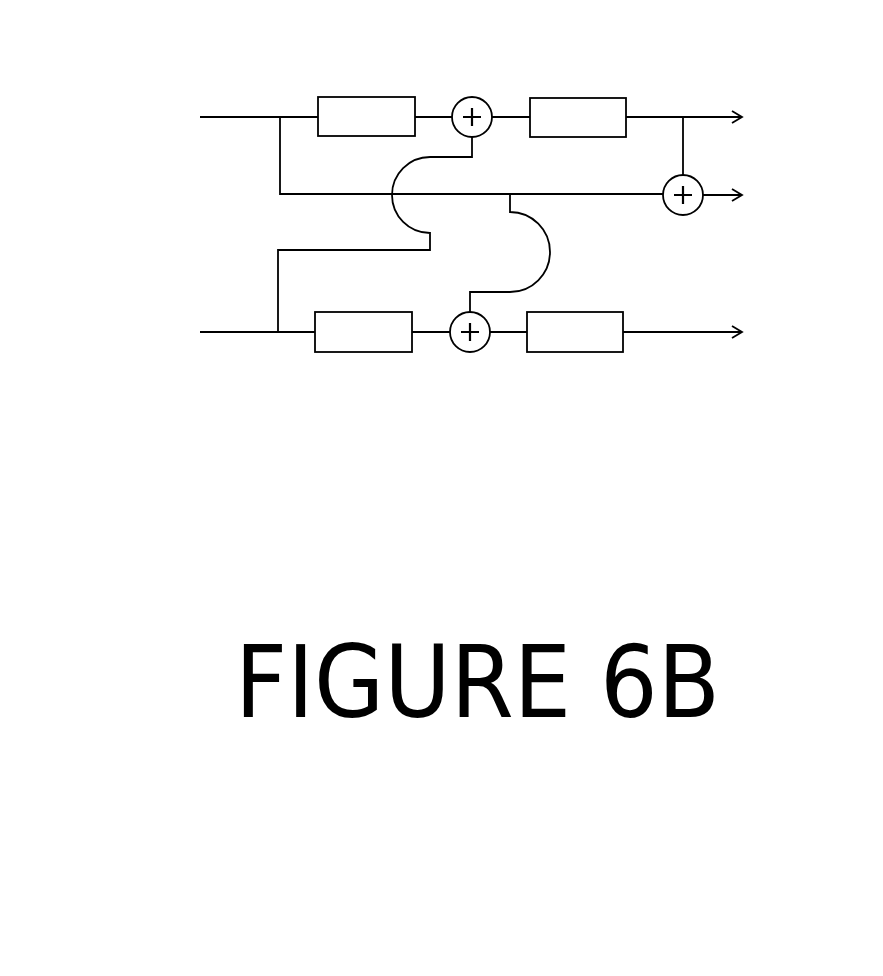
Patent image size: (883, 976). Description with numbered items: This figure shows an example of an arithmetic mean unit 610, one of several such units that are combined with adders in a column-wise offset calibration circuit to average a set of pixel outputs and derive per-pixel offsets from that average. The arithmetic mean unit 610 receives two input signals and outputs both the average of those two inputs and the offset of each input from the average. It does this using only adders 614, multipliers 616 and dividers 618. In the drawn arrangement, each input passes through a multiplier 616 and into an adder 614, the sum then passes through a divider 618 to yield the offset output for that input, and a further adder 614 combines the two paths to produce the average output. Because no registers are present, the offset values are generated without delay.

The arithmetic mean unit 610 is at (282, 72).
The adder 614 is at (500, 138).
The multiplier 616 is at (417, 97).
The divider 618 is at (627, 100).